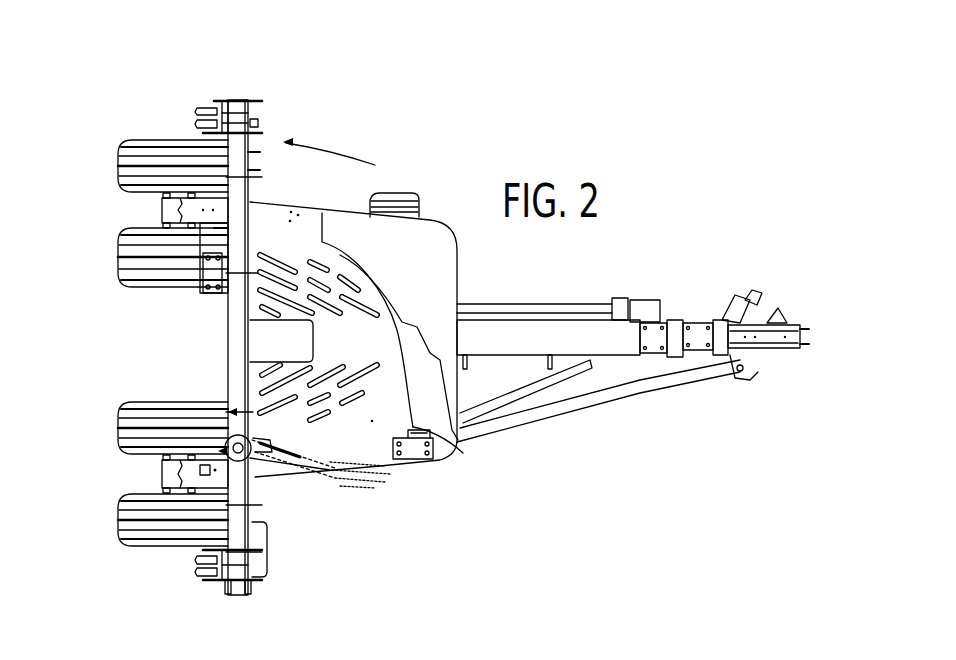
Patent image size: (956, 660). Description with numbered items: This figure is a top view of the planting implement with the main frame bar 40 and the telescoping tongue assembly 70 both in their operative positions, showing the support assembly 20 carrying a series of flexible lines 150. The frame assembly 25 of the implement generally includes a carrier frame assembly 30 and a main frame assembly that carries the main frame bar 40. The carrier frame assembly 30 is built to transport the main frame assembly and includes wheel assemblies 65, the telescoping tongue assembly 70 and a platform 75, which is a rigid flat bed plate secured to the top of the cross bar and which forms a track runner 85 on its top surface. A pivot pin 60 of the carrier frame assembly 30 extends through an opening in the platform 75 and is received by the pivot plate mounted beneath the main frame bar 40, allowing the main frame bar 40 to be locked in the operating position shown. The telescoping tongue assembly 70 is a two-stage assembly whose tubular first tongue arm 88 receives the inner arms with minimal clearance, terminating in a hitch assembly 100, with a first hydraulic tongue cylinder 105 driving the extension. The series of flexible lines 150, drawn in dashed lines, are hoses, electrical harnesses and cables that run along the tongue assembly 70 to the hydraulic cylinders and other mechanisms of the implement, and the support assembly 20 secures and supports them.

The support assembly 20 is at (332, 436).
The frame assembly 25 is at (440, 67).
The carrier frame assembly 30 is at (693, 245).
The main frame bar 40 is at (248, 196).
The pivot pin 60 is at (168, 461).
The wheel assemblies 65 is at (126, 553).
The telescoping tongue assembly 70 is at (615, 291).
The platform 75 is at (435, 217).
The track runner 85 is at (453, 438).
The first tongue arm 88 is at (498, 320).
The hitch assembly 100 is at (808, 295).
The first hydraulic tongue cylinder 105 is at (640, 291).
The series of flexible lines 150 is at (351, 494).